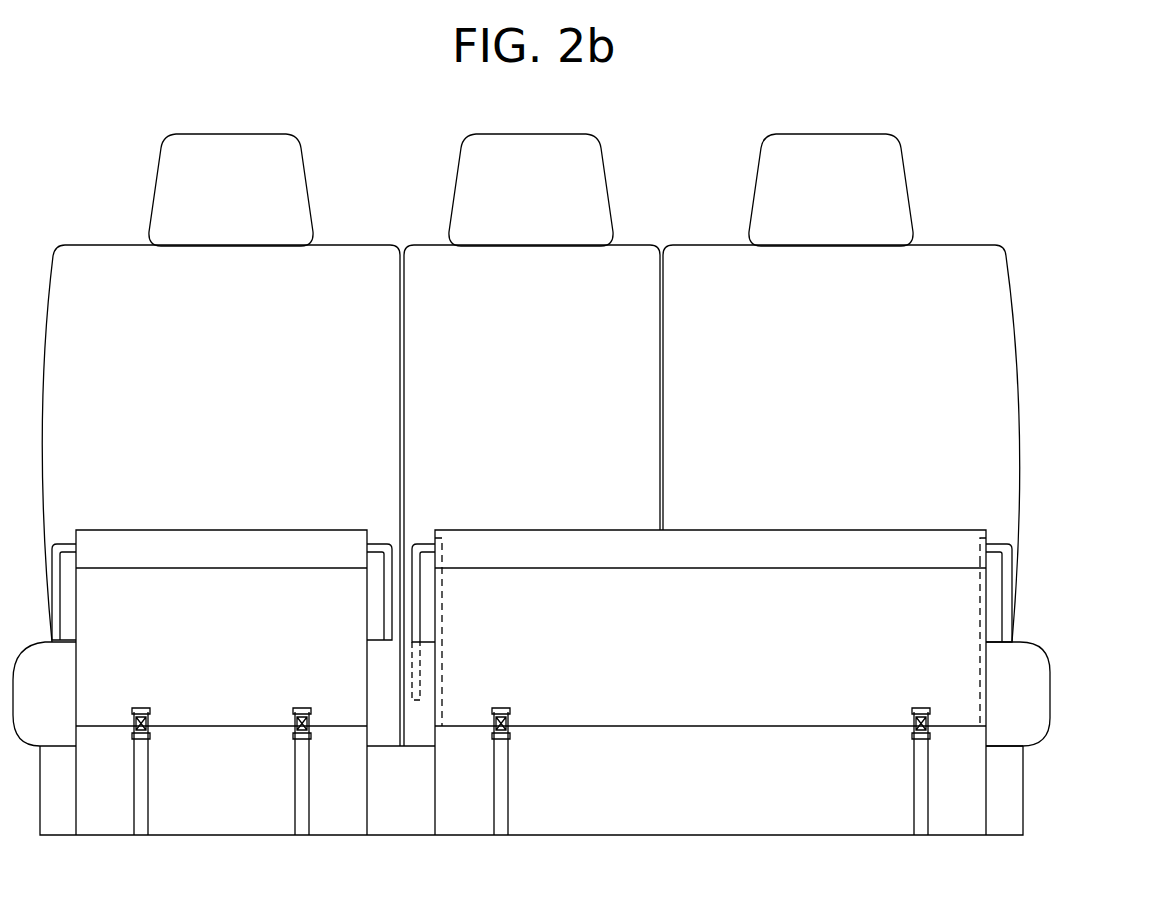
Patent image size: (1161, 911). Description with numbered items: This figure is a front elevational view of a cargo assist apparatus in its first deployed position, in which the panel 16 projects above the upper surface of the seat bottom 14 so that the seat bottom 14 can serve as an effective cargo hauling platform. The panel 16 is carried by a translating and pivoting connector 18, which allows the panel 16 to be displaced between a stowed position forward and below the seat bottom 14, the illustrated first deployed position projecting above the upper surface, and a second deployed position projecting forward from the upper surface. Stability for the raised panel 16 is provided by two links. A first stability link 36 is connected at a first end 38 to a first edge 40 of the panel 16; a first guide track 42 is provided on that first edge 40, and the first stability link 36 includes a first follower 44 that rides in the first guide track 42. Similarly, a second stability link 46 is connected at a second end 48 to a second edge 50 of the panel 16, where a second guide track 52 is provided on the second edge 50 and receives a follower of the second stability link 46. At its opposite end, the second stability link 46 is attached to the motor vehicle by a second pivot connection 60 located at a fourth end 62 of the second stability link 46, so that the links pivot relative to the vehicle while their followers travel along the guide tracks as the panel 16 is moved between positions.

The seat bottom 14 is at (1033, 710).
The panel 16 is at (952, 628).
The translating and pivoting connector 18 is at (515, 742).
The first stability link 36 is at (1008, 557).
The first end 38 is at (997, 544).
The first edge 40 is at (1067, 543).
The first guide track 42 is at (988, 659).
The first follower 44 is at (975, 548).
The second stability link 46 is at (417, 594).
The second end 48 is at (425, 543).
The second edge 50 is at (384, 608).
The second guide track 52 is at (447, 547).
The second pivot connection 60 is at (392, 717).
The fourth end 62 is at (402, 667).